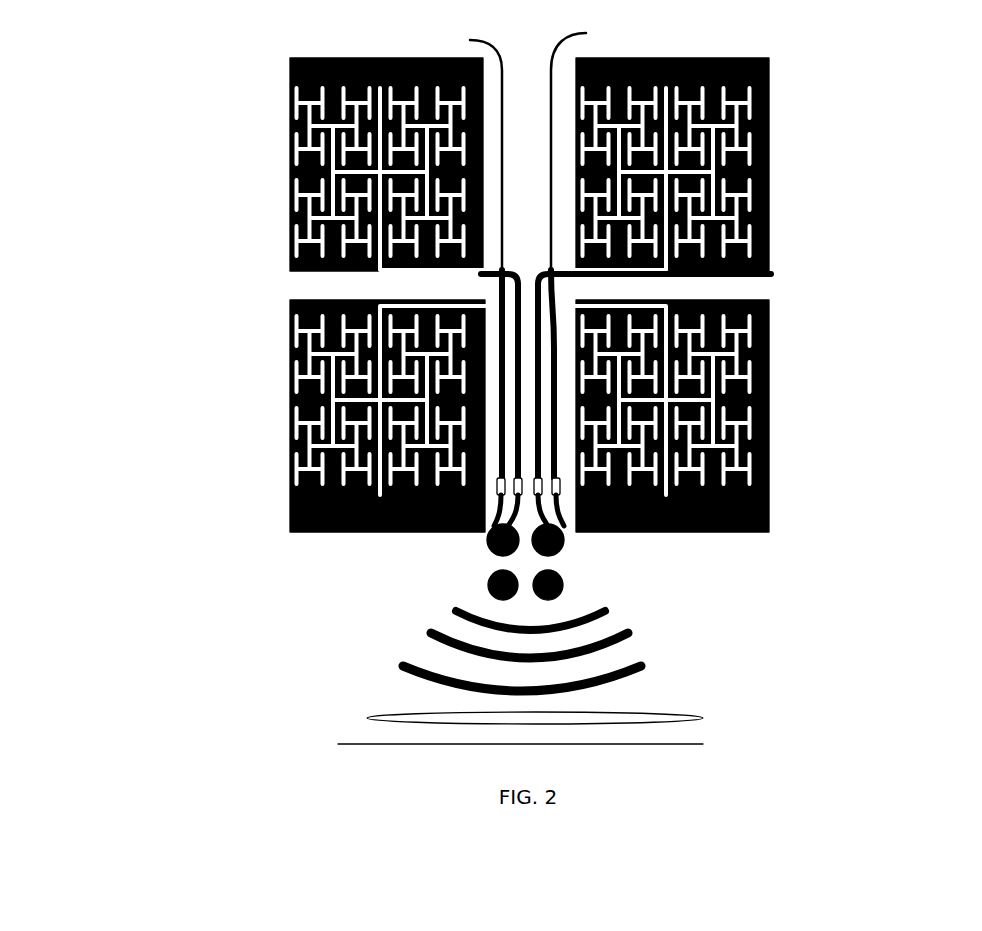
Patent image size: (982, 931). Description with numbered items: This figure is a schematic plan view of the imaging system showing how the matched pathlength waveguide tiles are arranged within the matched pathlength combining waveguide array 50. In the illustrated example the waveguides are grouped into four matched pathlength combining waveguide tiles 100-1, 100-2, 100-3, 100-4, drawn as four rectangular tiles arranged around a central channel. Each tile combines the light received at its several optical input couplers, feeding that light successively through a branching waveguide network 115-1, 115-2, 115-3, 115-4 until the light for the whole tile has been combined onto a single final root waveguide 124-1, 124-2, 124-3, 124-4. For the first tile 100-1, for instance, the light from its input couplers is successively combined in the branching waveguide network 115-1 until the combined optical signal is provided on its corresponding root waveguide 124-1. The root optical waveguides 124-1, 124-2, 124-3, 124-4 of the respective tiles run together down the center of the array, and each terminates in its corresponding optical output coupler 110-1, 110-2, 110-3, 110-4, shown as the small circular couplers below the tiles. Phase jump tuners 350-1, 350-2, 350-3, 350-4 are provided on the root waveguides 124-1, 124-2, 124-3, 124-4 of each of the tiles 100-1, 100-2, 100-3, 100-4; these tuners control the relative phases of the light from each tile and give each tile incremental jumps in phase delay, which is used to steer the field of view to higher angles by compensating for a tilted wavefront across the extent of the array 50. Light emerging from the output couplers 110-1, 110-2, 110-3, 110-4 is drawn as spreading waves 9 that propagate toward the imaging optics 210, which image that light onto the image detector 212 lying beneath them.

The matched pathlength combining waveguide array 50 is at (830, 86).
The matched pathlength combining waveguide tile 100-1 is at (282, 166).
The matched pathlength combining waveguide tile 100-2 is at (761, 162).
The matched pathlength combining waveguide tile 100-3 is at (282, 394).
The matched pathlength combining waveguide tile 100-4 is at (761, 397).
The branching waveguide network 115-1 is at (321, 112).
The branching waveguide network 115-2 is at (621, 112).
The branching waveguide network 115-3 is at (329, 445).
The branching waveguide network 115-4 is at (622, 445).
The root waveguide 124-1 is at (462, 30).
The root waveguide 124-2 is at (578, 24).
The root waveguide 124-3 is at (488, 303).
The root waveguide 124-4 is at (552, 305).
The phase jump tuner 350-1 is at (480, 563).
The phase jump tuner 350-2 is at (560, 572).
The phase jump tuner 350-3 is at (485, 522).
The phase jump tuner 350-4 is at (552, 522).
The optical output coupler 110-1 is at (483, 540).
The optical output coupler 110-2 is at (553, 546).
The optical output coupler 110-3 is at (480, 589).
The optical output coupler 110-4 is at (560, 591).
The radiated waves 9 is at (633, 660).
The imaging optics 210 is at (695, 709).
The image detector 212 is at (695, 738).